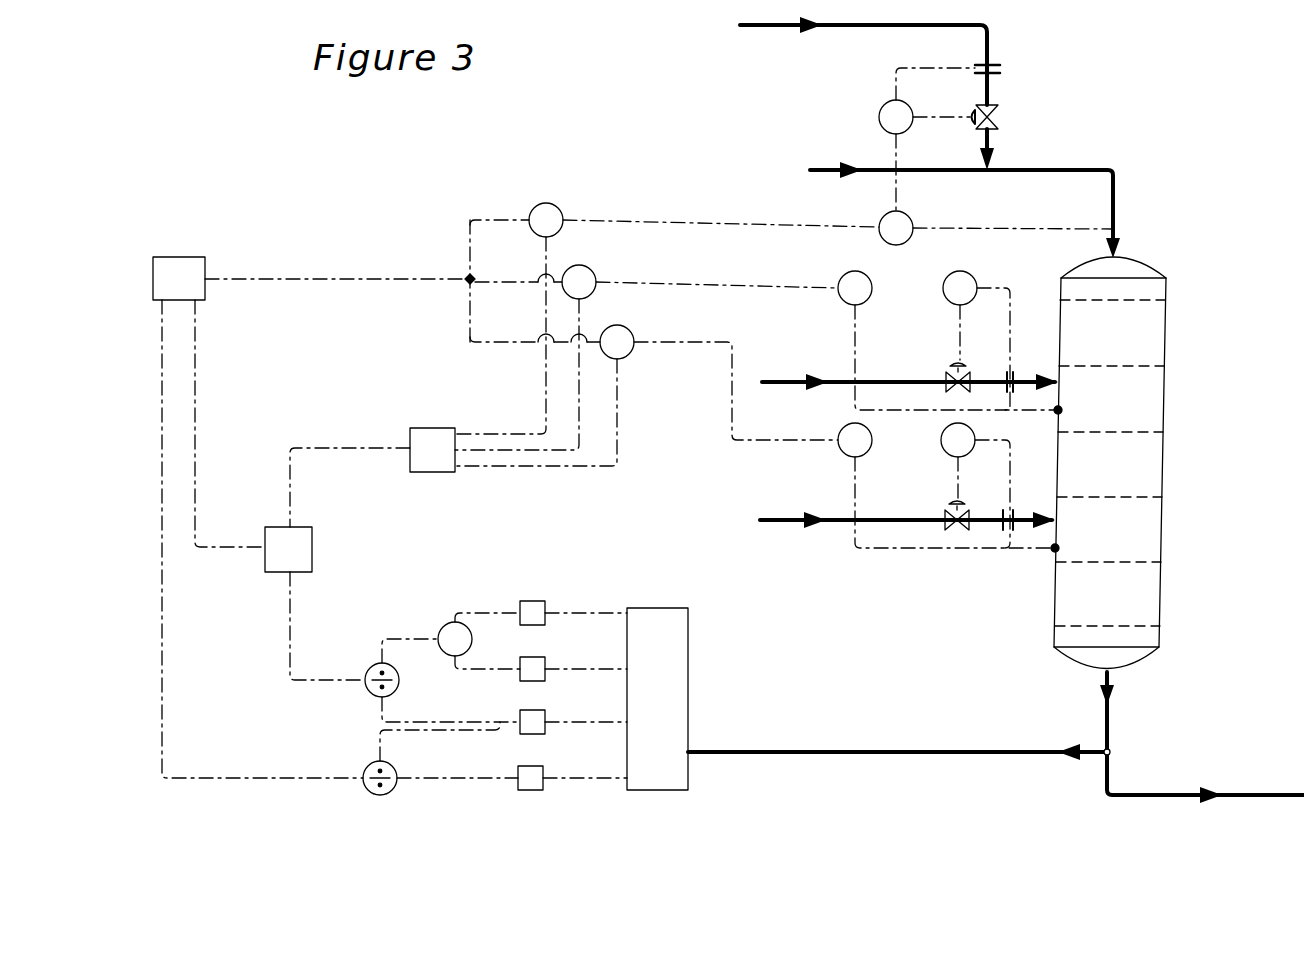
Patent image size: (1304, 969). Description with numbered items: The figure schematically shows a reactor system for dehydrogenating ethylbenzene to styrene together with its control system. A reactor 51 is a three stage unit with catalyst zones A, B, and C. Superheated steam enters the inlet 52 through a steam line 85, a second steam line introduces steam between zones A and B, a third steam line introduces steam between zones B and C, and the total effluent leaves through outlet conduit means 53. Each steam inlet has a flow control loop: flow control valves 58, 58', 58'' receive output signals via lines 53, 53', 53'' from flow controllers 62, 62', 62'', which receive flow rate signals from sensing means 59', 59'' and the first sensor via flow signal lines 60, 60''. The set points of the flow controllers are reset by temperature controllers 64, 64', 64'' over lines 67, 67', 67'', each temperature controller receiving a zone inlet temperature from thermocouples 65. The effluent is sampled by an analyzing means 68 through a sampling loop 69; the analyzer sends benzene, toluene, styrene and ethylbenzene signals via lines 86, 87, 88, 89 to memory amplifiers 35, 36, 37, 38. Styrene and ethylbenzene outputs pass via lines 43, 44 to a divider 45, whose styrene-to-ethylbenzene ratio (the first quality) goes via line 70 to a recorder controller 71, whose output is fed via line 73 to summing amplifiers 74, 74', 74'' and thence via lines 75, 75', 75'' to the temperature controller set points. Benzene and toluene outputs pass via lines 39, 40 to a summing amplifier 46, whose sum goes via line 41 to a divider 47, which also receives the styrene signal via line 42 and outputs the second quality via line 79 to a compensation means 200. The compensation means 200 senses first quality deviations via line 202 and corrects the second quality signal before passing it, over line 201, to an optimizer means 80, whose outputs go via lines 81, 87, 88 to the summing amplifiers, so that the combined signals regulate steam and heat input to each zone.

The reactor 51 is at (1166, 398).
The catalyst zone A is at (1130, 345).
The catalyst zone B is at (1118, 478).
The catalyst zone C is at (1118, 610).
The steam line 85 is at (776, 27).
The inlet 52 is at (833, 168).
The thermocouple 65 is at (1122, 230).
The sensing means 59' is at (1015, 220).
The sensing means 59'' is at (1025, 510).
The flow control valve 58 is at (1007, 113).
The flow control valve 58' is at (975, 371).
The flow control valve 58'' is at (973, 507).
The flow controller 62 is at (880, 114).
The flow controller 62' is at (975, 277).
The flow controller 62'' is at (979, 439).
The temperature controller 64 is at (876, 217).
The temperature controller 64' is at (851, 278).
The temperature controller 64'' is at (832, 435).
The flow signal line 60 is at (972, 226).
The flow signal line 60'' is at (1015, 494).
The outlet conduit means 53 is at (1108, 479).
The output signal line 53' is at (982, 332).
The output signal line 53'' is at (982, 477).
The output signal line 67 is at (923, 173).
The output signal line 67' is at (932, 357).
The output signal line 67'' is at (955, 518).
The set point line 75 is at (838, 213).
The set point line 75' is at (717, 271).
The set point line 75'' is at (736, 377).
The summing amplifier 74 is at (567, 209).
The summing amplifier 74' is at (603, 275).
The summing amplifier 74'' is at (640, 335).
The line 73 is at (274, 280).
The recorder controller 71 is at (173, 257).
The line 70 is at (160, 445).
The line 202 is at (198, 425).
The signal line 201 is at (315, 447).
The optimizer means 80 is at (433, 472).
The compensation means 200 is at (312, 545).
The line 81 is at (540, 385).
The line 87 is at (578, 415).
The line 88 is at (620, 440).
The line 79 is at (280, 650).
The divider 47 is at (372, 664).
The divider 45 is at (368, 766).
The line 41 is at (408, 636).
The summing amplifier 46 is at (452, 622).
The line 39 is at (490, 605).
The line 40 is at (490, 664).
The line 42 is at (448, 715).
The line 43 is at (483, 740).
The line 44 is at (500, 780).
The memory amplifier 35 is at (545, 605).
The memory amplifier 36 is at (545, 660).
The memory amplifier 37 is at (545, 714).
The memory amplifier 38 is at (543, 770).
The line 86 is at (598, 608).
The line 89 is at (598, 774).
The analyzing means 68 is at (688, 640).
The sampling loop 69 is at (938, 757).